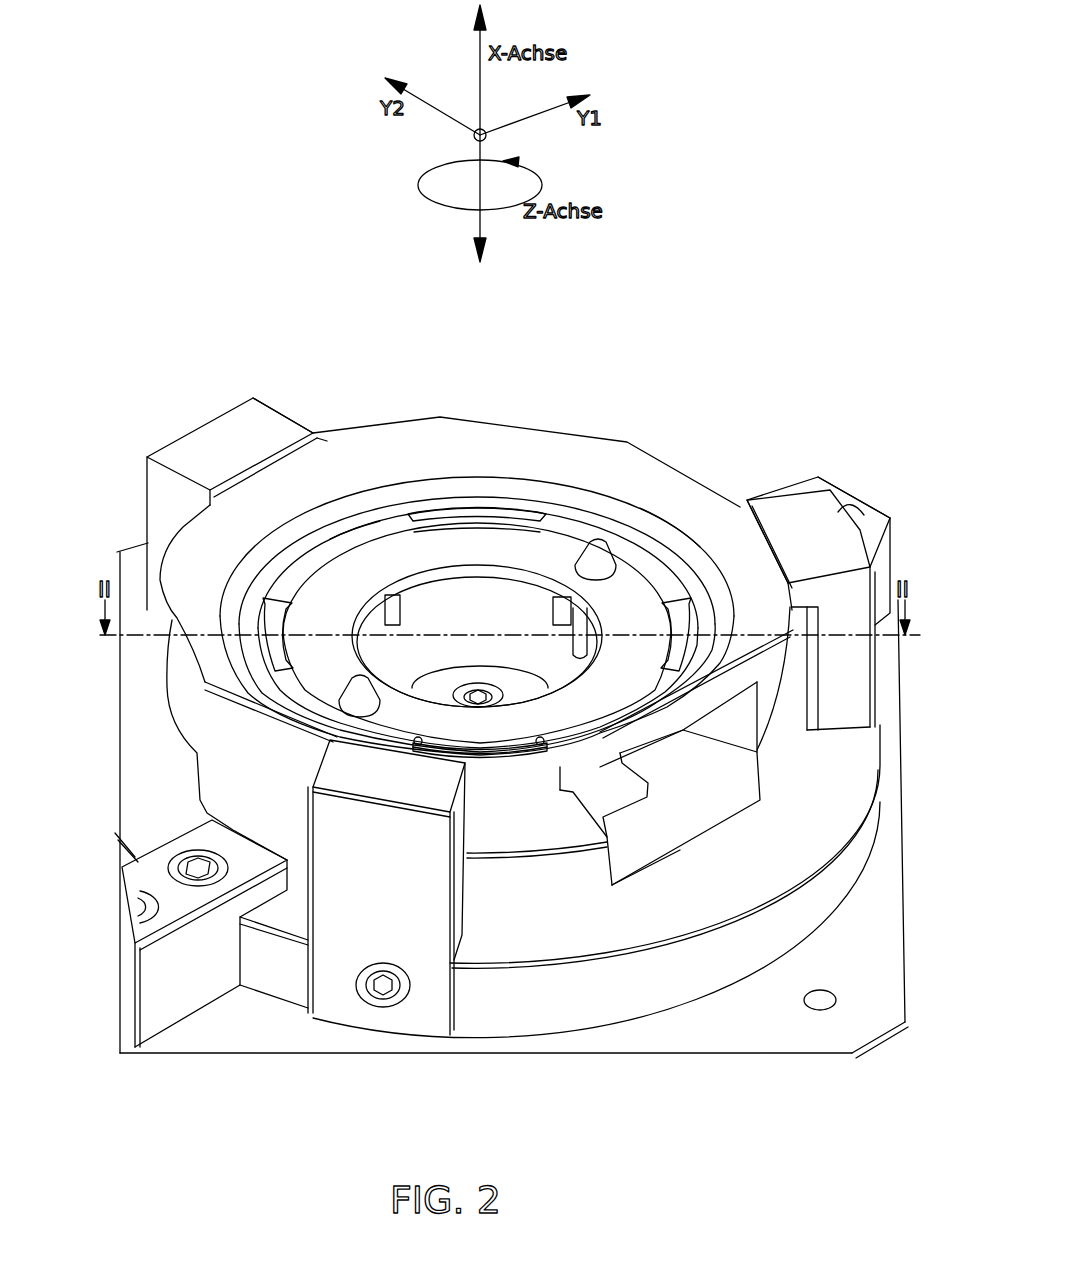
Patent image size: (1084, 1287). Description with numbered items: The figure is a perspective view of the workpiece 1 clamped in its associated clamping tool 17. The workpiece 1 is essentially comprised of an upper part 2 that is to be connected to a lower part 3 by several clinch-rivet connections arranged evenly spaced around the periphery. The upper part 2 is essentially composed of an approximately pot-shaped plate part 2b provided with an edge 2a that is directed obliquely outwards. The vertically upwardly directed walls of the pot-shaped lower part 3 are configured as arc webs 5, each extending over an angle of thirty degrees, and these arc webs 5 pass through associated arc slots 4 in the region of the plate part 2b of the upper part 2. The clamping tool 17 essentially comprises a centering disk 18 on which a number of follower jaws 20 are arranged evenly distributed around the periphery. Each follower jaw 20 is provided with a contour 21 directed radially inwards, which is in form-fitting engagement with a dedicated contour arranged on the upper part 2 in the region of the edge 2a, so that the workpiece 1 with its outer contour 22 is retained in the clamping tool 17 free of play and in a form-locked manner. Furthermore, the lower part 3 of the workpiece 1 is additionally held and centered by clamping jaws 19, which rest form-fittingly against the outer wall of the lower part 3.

The workpiece 1 is at (597, 479).
The upper part 2 is at (635, 545).
The edge 2a is at (698, 487).
The plate part 2b is at (392, 563).
The lower part 3 is at (624, 758).
The arc slot 4 is at (277, 670).
The arc web 5 is at (490, 757).
The clamping tool 17 is at (632, 845).
The centering disk 18 is at (723, 935).
The clamping jaw 19 is at (568, 825).
The follower jaw 20 is at (208, 448).
The contour 21 is at (285, 462).
The outer contour 22 is at (327, 441).